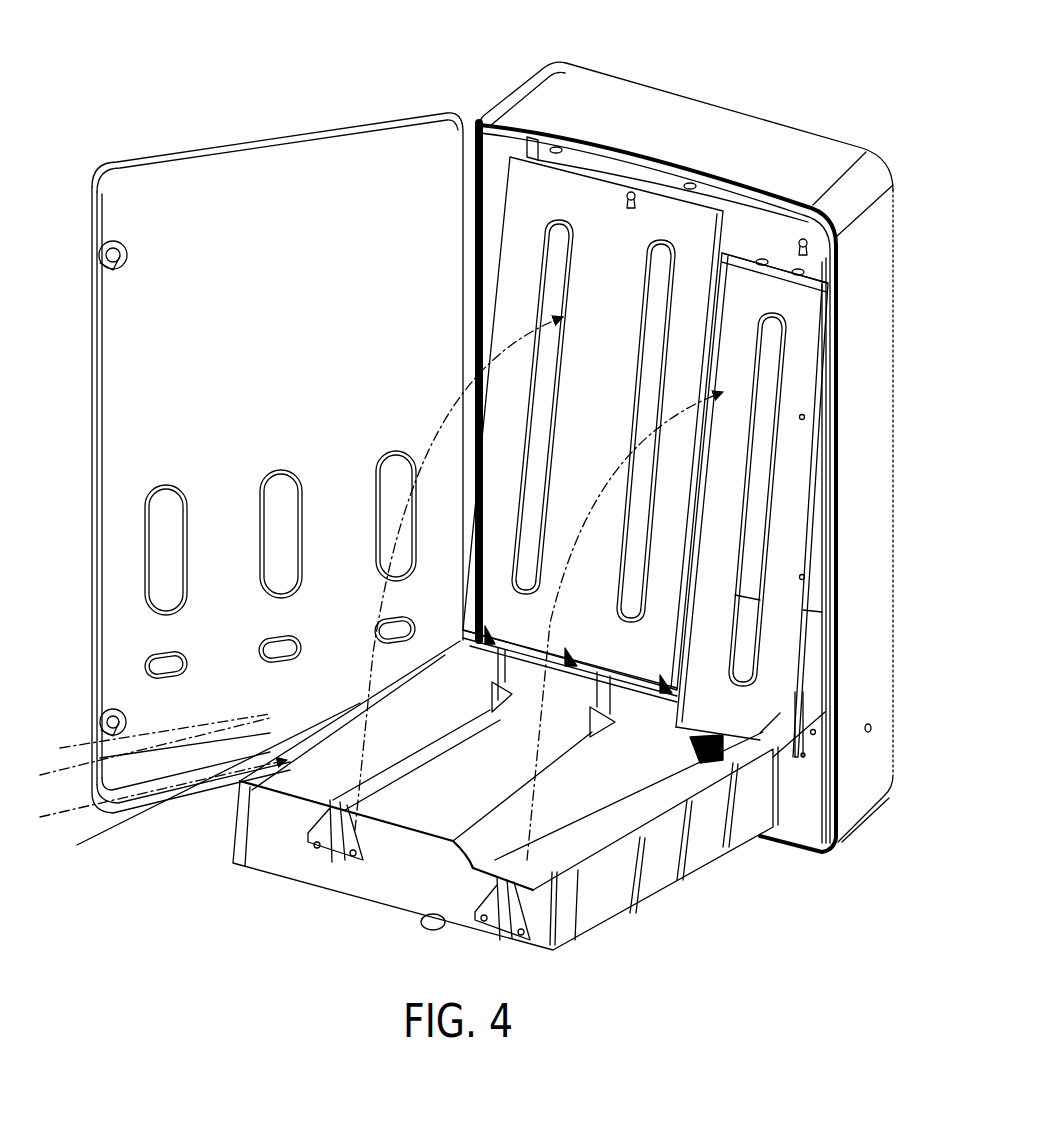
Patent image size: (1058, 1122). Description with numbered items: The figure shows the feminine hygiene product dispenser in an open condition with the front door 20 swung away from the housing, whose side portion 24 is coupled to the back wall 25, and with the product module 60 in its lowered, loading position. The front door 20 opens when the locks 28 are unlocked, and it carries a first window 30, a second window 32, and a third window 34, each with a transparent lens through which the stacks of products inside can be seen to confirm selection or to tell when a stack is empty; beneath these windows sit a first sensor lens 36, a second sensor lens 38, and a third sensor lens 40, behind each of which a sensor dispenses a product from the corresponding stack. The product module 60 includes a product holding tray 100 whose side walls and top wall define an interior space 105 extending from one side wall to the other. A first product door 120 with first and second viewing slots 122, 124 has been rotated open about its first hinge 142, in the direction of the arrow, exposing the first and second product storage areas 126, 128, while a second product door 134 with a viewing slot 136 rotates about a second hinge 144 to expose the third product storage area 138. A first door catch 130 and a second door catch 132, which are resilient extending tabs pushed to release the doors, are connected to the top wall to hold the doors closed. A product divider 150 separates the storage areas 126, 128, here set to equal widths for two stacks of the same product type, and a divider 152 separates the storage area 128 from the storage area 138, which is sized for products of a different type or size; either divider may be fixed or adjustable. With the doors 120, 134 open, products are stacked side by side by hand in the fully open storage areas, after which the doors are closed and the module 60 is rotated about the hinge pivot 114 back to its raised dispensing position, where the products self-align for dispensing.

The front door 20 is at (168, 186).
The side portion 24 is at (878, 580).
The back wall 25 is at (771, 233).
The lock 28 is at (98, 250).
The first window 30 is at (401, 451).
The second window 32 is at (286, 470).
The third window 34 is at (172, 486).
The first sensor lens 36 is at (388, 616).
The second sensor lens 38 is at (268, 636).
The third sensor lens 40 is at (153, 651).
The product module 60 is at (233, 826).
The product holding tray 100 is at (581, 933).
The interior space 105 is at (200, 780).
The hinge pivot 114 is at (882, 729).
The first product door 120 is at (521, 183).
The first viewing slot 122 is at (556, 240).
The second viewing slot 124 is at (666, 262).
The first product storage area 126 is at (440, 708).
The second product storage area 128 is at (490, 773).
The first door catch 130 is at (325, 820).
The second door catch 132 is at (486, 915).
The second product door 134 is at (810, 330).
The viewing slot 136 is at (762, 470).
The third product storage area 138 is at (630, 783).
The first hinge 142 is at (491, 630).
The second hinge 144 is at (719, 766).
The product divider 150 is at (393, 802).
The divider 152 is at (584, 806).